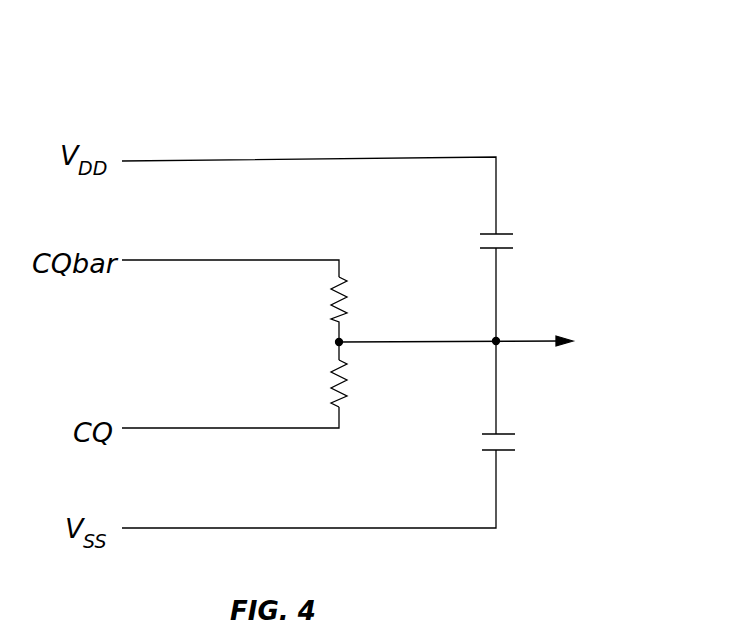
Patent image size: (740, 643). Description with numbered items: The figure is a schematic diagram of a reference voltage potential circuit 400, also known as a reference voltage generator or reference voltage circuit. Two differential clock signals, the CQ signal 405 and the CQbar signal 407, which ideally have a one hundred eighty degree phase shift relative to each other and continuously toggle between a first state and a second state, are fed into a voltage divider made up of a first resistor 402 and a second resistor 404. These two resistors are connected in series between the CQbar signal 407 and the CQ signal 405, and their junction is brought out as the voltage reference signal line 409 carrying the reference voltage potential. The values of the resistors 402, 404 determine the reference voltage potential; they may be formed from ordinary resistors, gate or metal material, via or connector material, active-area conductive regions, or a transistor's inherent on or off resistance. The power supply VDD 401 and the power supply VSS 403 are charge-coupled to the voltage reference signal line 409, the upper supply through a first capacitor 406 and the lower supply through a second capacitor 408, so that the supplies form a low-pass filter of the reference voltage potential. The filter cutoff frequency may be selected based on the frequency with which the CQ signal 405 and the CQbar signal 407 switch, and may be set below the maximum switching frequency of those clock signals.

The reference voltage potential circuit 400 is at (505, 86).
The power supply V_DD 401 is at (362, 157).
The resistor R1 402 is at (347, 300).
The power supply V_SS 403 is at (365, 529).
The resistor R2 404 is at (347, 388).
The CQ signal 405 is at (205, 430).
The capacitor C1 406 is at (500, 234).
The CQbar signal 407 is at (205, 260).
The capacitor C2 408 is at (505, 434).
The voltage reference signal line 409 is at (527, 340).